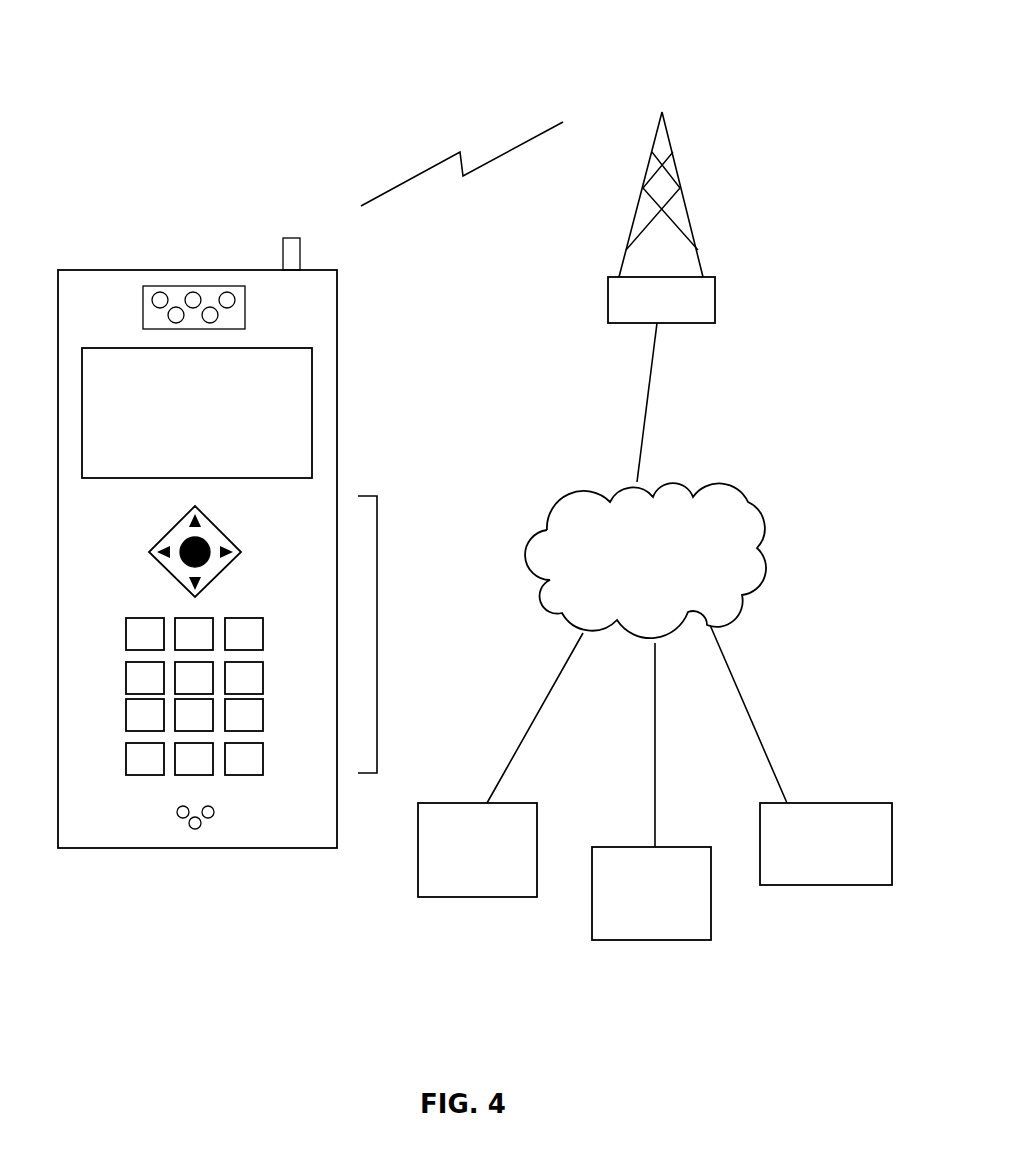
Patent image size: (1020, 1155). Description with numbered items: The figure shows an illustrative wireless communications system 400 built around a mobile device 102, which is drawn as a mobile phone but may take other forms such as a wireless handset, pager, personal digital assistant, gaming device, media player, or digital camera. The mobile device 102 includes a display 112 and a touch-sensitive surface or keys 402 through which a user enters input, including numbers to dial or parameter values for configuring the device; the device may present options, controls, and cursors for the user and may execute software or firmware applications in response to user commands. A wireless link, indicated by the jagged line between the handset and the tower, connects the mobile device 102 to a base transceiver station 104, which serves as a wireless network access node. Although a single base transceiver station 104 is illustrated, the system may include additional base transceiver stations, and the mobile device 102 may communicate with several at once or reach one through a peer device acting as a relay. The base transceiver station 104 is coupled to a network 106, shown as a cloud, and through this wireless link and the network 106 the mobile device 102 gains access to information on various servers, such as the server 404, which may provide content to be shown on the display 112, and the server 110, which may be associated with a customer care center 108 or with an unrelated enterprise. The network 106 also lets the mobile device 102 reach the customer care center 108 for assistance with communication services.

The wireless communications system 400 is at (350, 118).
The mobile device 102 is at (108, 273).
The display 112 is at (315, 402).
The keys 402 is at (377, 533).
The base transceiver station 104 is at (715, 291).
The network 106 is at (763, 510).
The server 404 is at (475, 897).
The server 110 is at (642, 940).
The customer care center 108 is at (821, 885).